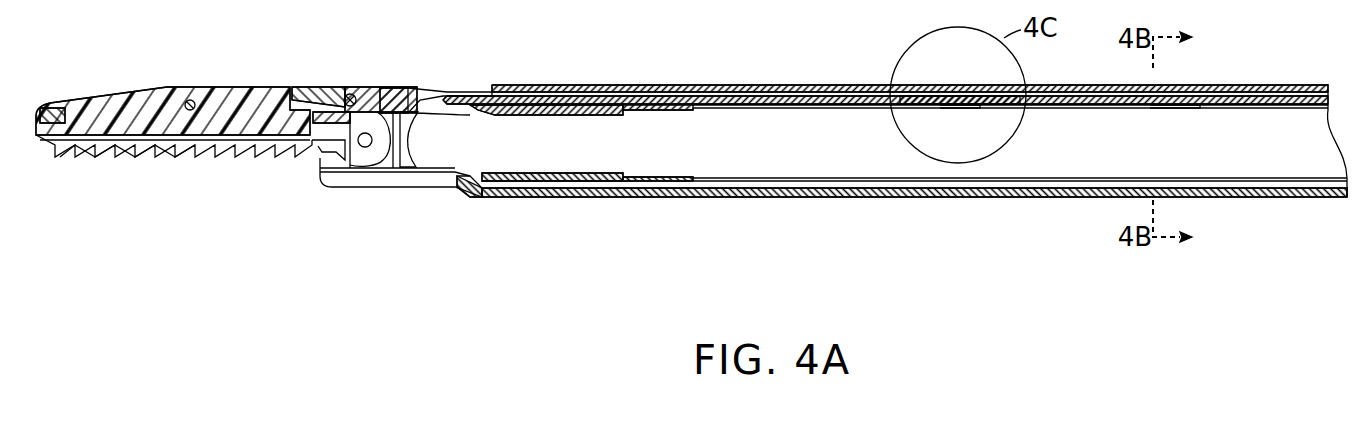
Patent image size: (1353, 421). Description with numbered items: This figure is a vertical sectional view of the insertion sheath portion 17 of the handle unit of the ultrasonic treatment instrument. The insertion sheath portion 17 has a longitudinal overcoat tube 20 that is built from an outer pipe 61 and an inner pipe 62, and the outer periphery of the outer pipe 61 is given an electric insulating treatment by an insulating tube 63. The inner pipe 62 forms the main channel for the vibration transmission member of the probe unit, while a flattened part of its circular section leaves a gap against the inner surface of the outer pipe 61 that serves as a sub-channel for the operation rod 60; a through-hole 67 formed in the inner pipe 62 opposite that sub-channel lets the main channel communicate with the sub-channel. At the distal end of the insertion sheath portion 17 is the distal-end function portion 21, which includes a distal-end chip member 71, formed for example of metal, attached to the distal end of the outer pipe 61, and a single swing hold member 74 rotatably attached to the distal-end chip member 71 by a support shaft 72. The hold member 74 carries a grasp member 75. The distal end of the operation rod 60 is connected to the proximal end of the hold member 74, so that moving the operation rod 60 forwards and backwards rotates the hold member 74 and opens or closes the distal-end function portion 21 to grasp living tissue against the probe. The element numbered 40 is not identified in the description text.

The insertion sheath portion 17 is at (912, 218).
The overcoat tube 20 is at (712, 194).
The distal-end function portion 21 is at (248, 68).
The operation wire 40 is at (779, 168).
The operation rod 60 is at (457, 91).
The outer pipe 61 is at (826, 84).
The inner pipe 62 is at (1043, 112).
The insulating tube 63 is at (947, 85).
The through-hole 67 is at (963, 112).
The distal-end chip member 71 is at (483, 196).
The support shaft 72 is at (368, 147).
The swing hold member 74 is at (52, 110).
The grasp member 75 is at (132, 146).